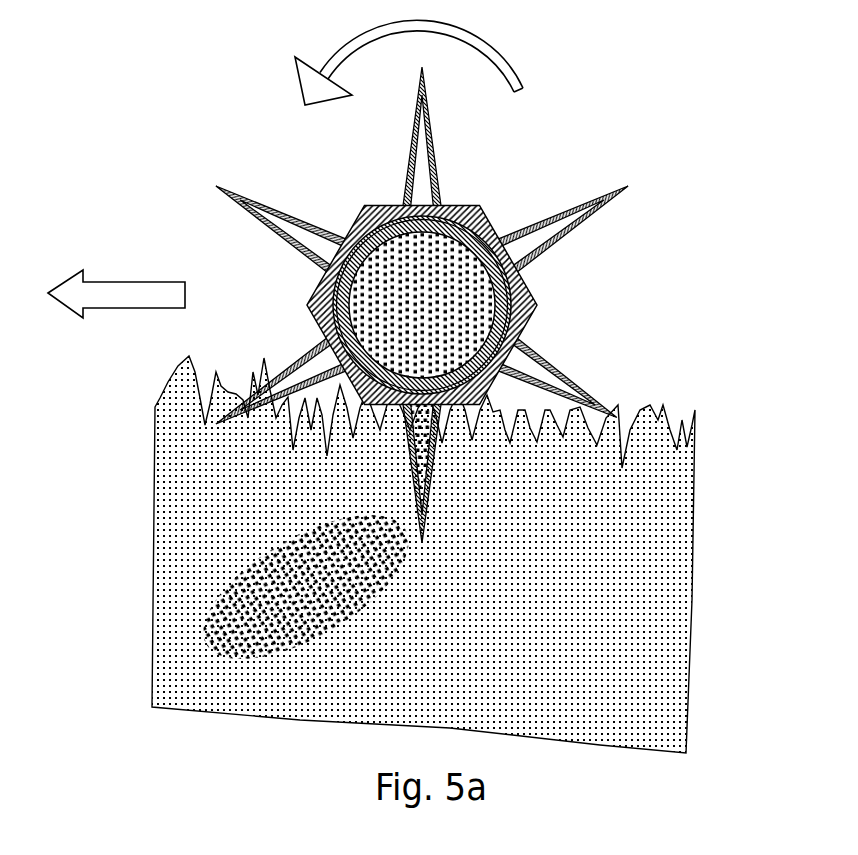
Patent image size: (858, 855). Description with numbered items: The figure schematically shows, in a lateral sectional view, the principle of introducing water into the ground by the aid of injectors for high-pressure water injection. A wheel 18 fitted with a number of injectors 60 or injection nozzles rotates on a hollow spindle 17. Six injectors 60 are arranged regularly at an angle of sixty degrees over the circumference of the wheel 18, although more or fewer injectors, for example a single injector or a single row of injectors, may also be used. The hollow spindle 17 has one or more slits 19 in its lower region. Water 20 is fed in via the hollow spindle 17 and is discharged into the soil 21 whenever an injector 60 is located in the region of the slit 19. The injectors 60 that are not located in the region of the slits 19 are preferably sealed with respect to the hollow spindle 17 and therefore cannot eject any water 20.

The hollow spindle 17 is at (455, 232).
The wheel 18 is at (522, 270).
The slit 19 is at (292, 372).
The water 20 is at (482, 332).
The soil 21 is at (648, 520).
The injector 60 is at (242, 192).